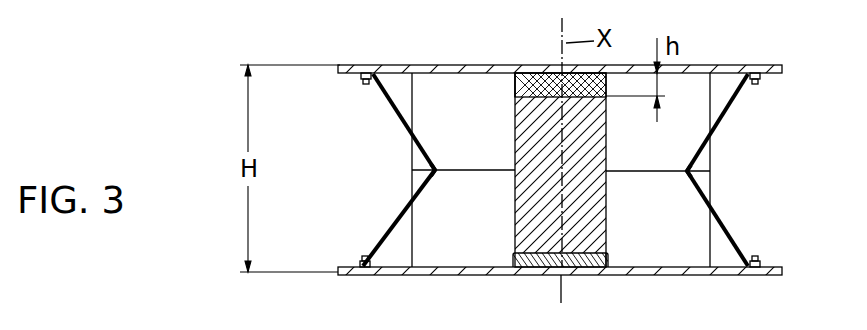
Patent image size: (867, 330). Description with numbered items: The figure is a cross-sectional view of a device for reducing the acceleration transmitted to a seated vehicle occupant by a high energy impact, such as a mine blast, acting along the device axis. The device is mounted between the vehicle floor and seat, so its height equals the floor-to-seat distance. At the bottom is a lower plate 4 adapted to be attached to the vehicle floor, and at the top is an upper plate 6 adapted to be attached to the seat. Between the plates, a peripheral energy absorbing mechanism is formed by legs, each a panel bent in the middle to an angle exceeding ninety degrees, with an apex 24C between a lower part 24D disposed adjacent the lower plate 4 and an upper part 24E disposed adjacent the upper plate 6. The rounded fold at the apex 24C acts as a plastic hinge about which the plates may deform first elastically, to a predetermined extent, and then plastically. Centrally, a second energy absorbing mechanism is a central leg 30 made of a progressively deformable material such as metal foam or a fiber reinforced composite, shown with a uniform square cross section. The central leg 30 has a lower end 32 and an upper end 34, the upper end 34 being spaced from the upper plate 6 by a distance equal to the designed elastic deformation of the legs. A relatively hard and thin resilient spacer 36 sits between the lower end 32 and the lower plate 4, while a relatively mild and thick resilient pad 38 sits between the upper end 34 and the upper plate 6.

The lower plate 4 is at (446, 276).
The upper plate 6 is at (545, 73).
The apex 24C is at (433, 170).
The lower part 24D is at (397, 222).
The upper part 24E is at (403, 130).
The central leg 30 is at (536, 192).
The lower end 32 is at (611, 250).
The upper end 34 is at (515, 103).
The resilient spacer 36 is at (610, 270).
The resilient pad 38 is at (515, 84).